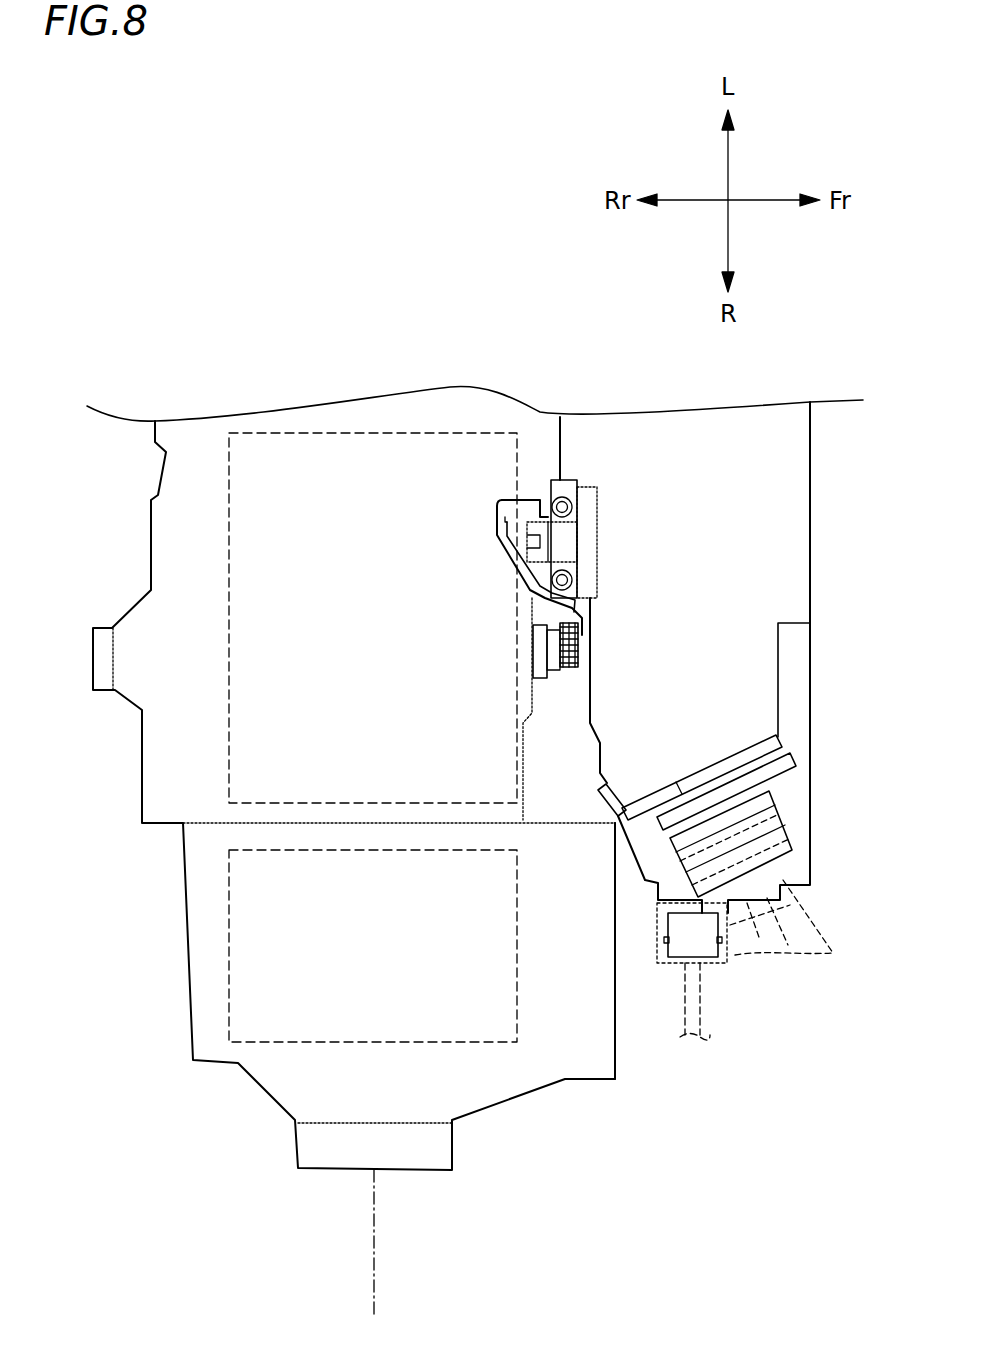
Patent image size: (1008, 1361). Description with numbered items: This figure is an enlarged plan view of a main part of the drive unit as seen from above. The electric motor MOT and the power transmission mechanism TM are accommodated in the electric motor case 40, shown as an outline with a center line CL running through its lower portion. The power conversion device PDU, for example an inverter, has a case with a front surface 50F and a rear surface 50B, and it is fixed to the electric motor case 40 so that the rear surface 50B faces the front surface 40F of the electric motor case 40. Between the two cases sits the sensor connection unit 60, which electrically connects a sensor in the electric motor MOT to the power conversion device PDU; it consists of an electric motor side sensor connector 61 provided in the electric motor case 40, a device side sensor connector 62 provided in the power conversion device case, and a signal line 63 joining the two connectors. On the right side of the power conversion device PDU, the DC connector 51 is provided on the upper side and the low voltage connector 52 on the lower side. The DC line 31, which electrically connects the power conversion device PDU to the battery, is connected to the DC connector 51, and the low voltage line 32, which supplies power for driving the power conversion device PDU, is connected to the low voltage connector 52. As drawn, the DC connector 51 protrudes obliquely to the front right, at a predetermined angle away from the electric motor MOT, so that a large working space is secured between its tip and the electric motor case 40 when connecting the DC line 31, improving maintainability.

The electric motor case 40 is at (133, 642).
The front surface of the electric motor case 40F is at (622, 962).
The electric motor MOT is at (243, 508).
The power transmission mechanism TM is at (243, 956).
The center line CL is at (375, 1268).
The power conversion device PDU is at (785, 468).
The front surface of the power conversion device case 50F is at (810, 627).
The rear surface of the power conversion device case 50B is at (555, 445).
The sensor connection unit 60 is at (557, 633).
The electric motor side sensor connector 61 is at (552, 675).
The device side sensor connector 62 is at (552, 547).
The signal line 63 is at (513, 562).
The DC connector 51 is at (775, 842).
The low voltage connector 52 is at (708, 950).
The DC line 31 is at (730, 958).
The low voltage line 32 is at (702, 1013).